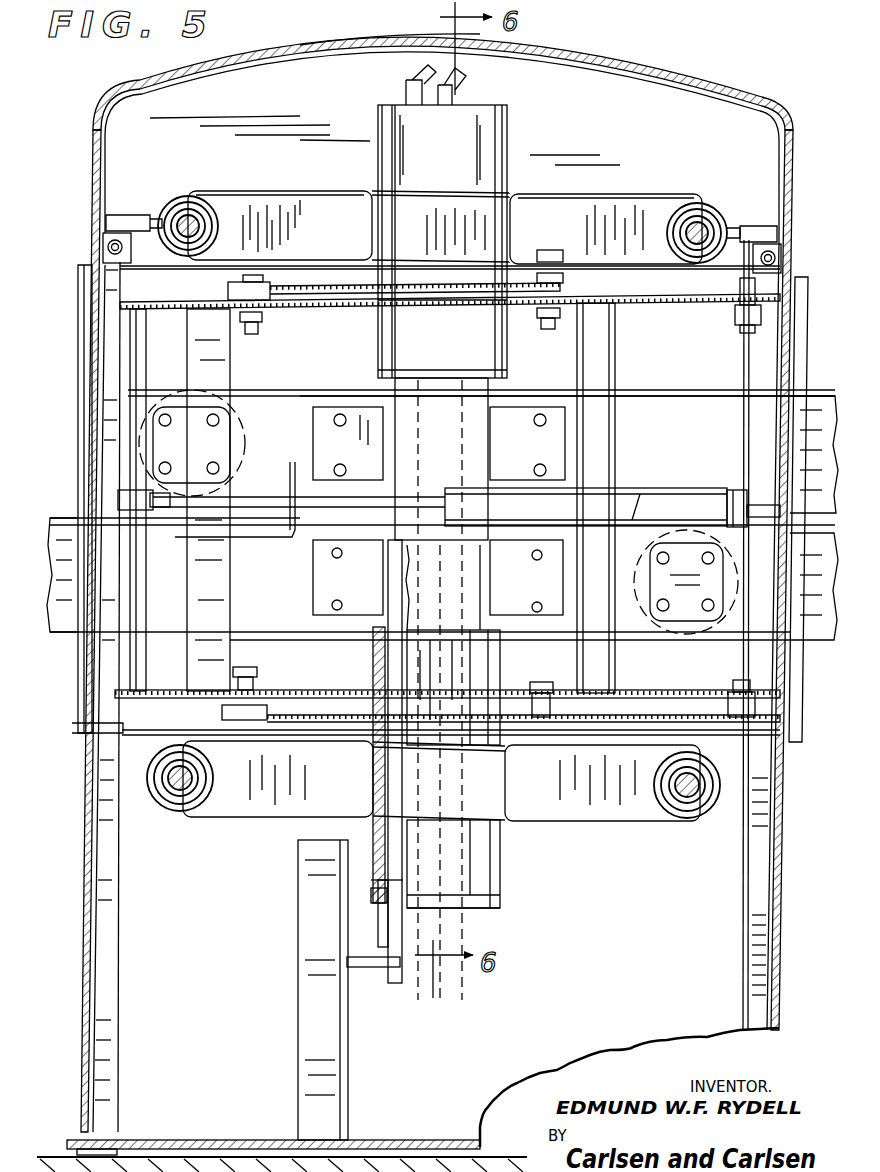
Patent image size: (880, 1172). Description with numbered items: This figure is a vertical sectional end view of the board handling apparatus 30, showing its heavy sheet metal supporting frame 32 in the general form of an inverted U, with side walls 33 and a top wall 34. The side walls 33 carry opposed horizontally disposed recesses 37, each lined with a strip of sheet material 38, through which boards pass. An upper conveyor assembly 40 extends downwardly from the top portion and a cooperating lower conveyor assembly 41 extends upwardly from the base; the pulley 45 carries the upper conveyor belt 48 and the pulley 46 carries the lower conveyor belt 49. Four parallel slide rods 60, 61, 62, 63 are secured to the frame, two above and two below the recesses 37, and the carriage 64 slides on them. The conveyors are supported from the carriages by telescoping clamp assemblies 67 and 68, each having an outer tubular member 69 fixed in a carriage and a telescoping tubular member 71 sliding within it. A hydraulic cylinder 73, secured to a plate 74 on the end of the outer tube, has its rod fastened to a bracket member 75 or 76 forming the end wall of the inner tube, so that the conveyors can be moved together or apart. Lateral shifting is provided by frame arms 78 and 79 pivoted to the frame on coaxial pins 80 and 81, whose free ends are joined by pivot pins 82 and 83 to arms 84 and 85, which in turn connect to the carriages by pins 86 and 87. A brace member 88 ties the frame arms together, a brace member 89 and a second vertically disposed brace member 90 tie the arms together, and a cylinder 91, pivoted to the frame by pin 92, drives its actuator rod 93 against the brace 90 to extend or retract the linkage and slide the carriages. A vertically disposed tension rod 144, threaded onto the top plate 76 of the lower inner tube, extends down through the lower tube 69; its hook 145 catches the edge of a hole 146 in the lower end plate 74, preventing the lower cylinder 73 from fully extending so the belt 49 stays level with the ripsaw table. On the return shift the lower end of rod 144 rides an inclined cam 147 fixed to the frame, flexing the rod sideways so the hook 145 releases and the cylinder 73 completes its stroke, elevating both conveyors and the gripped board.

The board handling apparatus 30 is at (778, 95).
The supporting frame 32 is at (780, 965).
The side walls 33 is at (83, 808).
The top wall 34 is at (396, 40).
The recesses 37 is at (78, 280).
The strip of sheet material 38 is at (802, 288).
The upper conveyor assembly 40 is at (700, 368).
The lower conveyor assembly 41 is at (272, 612).
The pulley 45 is at (172, 398).
The pulley 46 is at (652, 640).
The upper conveyor belt 48 is at (356, 388).
The lower conveyor belt 49 is at (520, 526).
The slide rod 60 is at (180, 222).
The slide rod 61 is at (705, 226).
The slide rod 62 is at (180, 790).
The slide rod 63 is at (692, 795).
The carriage 64 is at (632, 192).
The upper telescoping clamp assembly 67 is at (486, 335).
The lower telescoping clamp assembly 68 is at (506, 682).
The outer tubular member 69 is at (505, 145).
The telescoping tubular member 71 is at (446, 448).
The hydraulic cylinder 73 is at (430, 800).
The plate 74 is at (470, 908).
The bracket member 75 is at (366, 460).
The bracket member 76 is at (320, 585).
The frame arm 78 is at (302, 298).
The frame arm 79 is at (292, 722).
The pin 80 is at (738, 320).
The pin 81 is at (738, 692).
The pivot pin 82 is at (256, 334).
The pivot pin 83 is at (258, 673).
The arm 84 is at (316, 318).
The arm 85 is at (362, 692).
The pin 86 is at (556, 330).
The pin 87 is at (555, 672).
The brace member 88 is at (610, 352).
The brace member 89 is at (196, 615).
The second brace member 90 is at (130, 352).
The cylinder 91 is at (634, 506).
The pin 92 is at (738, 488).
The actuator rod 93 is at (264, 500).
The tension rod 144 is at (386, 577).
The hook 145 is at (376, 925).
The hole 146 is at (372, 882).
The cam 147 is at (370, 968).